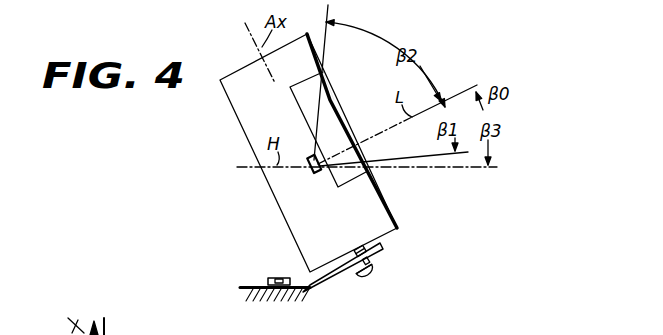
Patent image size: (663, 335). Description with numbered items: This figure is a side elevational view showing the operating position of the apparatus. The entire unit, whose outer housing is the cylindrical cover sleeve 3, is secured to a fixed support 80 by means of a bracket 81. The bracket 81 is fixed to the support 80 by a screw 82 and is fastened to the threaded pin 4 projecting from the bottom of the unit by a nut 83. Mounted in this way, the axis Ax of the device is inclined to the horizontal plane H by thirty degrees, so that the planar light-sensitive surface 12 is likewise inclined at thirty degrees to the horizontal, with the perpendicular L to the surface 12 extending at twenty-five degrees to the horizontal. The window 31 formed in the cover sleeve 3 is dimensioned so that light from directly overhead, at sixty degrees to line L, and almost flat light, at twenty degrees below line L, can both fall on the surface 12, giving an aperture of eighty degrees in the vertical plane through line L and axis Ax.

The cover sleeve 3 is at (375, 203).
The threaded pin 4 is at (364, 273).
The planar light-sensitive surface 12 is at (324, 156).
The window 31 is at (328, 83).
The fixed support 80 is at (253, 292).
The bracket 81 is at (330, 281).
The screw 82 is at (278, 277).
The nut 83 is at (378, 258).